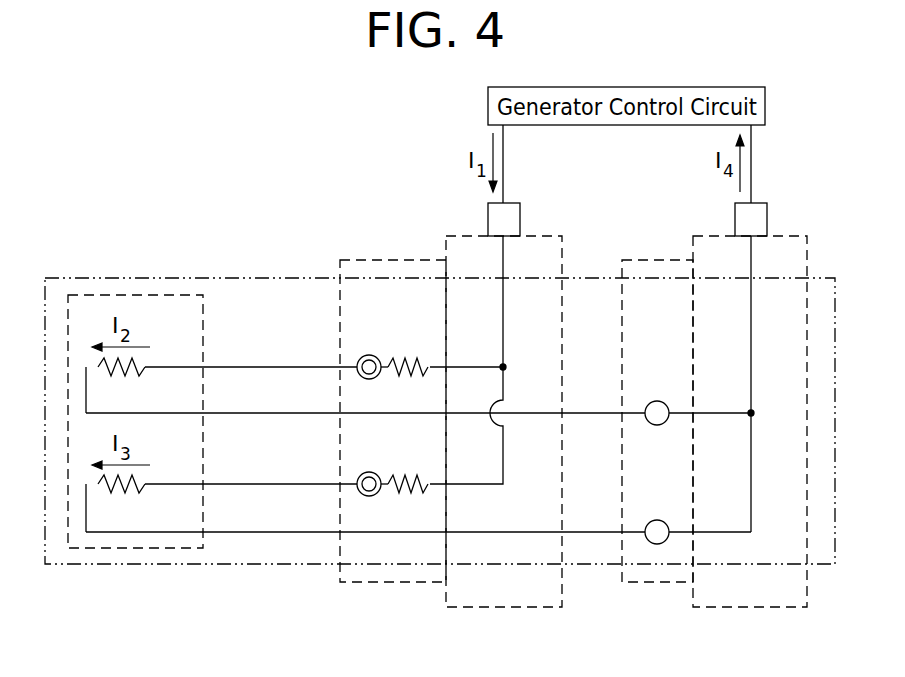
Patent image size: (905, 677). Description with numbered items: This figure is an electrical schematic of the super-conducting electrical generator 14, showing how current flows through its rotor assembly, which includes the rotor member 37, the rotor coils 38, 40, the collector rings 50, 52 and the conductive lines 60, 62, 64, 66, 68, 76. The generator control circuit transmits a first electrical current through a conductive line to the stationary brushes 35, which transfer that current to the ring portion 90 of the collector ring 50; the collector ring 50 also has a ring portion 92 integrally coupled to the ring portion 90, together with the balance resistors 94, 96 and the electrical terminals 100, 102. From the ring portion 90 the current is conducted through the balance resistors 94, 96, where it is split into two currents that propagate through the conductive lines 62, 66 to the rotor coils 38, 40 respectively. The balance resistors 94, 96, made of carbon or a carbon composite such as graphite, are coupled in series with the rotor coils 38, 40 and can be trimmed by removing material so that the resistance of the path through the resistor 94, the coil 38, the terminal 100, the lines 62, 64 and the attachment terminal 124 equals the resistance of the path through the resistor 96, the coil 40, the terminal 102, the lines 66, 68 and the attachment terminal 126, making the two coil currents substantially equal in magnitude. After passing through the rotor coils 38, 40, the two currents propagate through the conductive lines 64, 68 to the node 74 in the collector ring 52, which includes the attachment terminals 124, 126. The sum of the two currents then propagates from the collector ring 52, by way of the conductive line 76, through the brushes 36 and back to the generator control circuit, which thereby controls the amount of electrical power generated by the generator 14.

The super-conducting electrical generator 14 is at (210, 299).
The stationary brush 35 is at (513, 203).
The brush 36 is at (759, 203).
The rotor member 37 is at (822, 274).
The rotor coil 38 is at (143, 359).
The rotor coil 40 is at (143, 476).
The collector ring 50 is at (550, 214).
The collector ring 52 is at (797, 216).
The conductive line 60 is at (508, 312).
The conductive line 62 is at (297, 365).
The conductive line 64 is at (248, 413).
The conductive line 66 is at (297, 482).
The conductive line 68 is at (248, 531).
The node 74 is at (755, 413).
The conductive line 76 is at (754, 326).
The ring portion 90 is at (566, 256).
The ring portion 92 is at (392, 258).
The balance resistor 94 is at (416, 358).
The balance resistor 96 is at (416, 475).
The electrical terminal 100 is at (369, 355).
The electrical terminal 102 is at (369, 472).
The attachment terminal 124 is at (658, 401).
The attachment terminal 126 is at (658, 520).